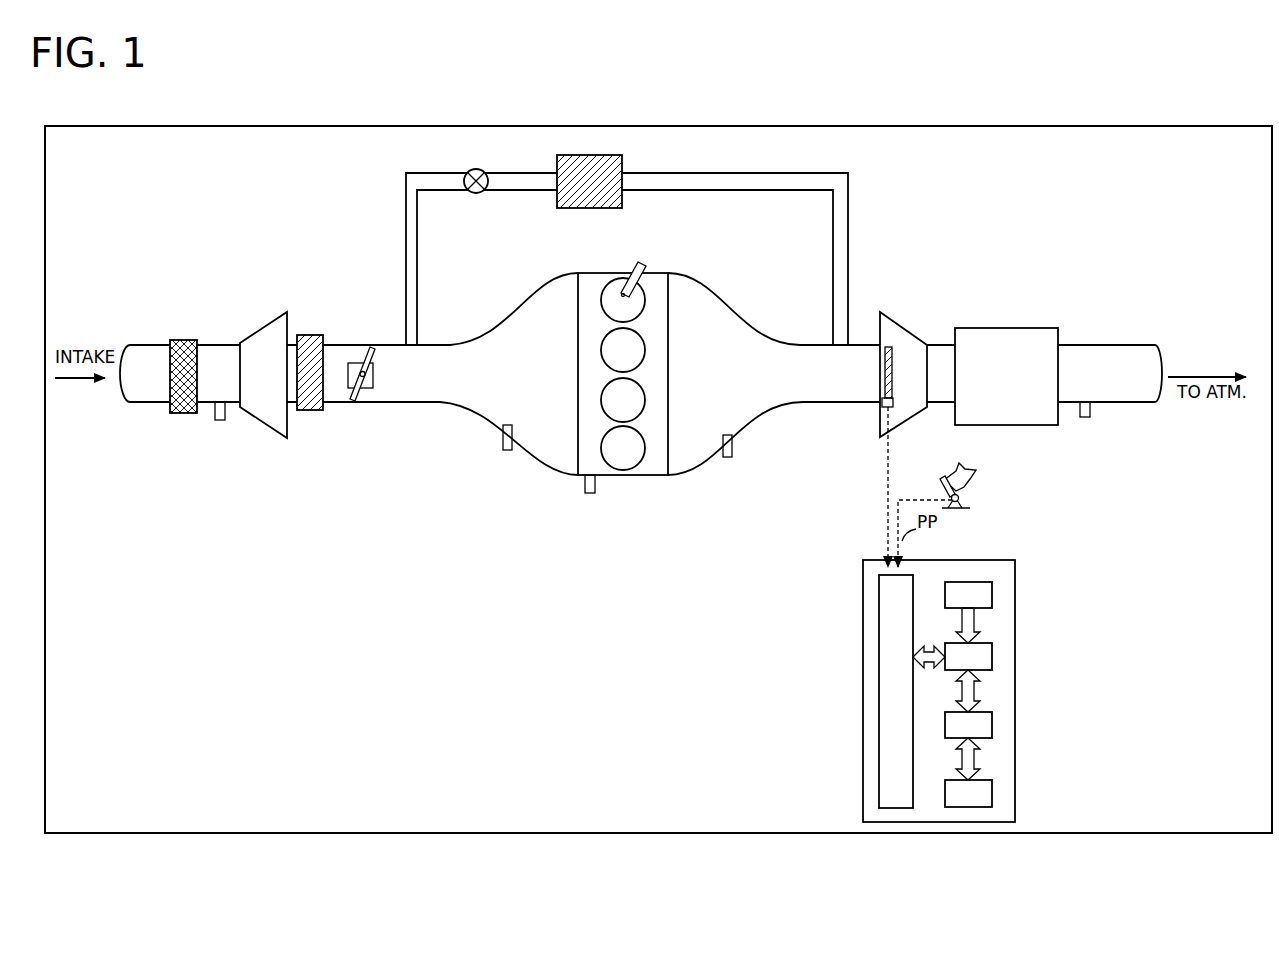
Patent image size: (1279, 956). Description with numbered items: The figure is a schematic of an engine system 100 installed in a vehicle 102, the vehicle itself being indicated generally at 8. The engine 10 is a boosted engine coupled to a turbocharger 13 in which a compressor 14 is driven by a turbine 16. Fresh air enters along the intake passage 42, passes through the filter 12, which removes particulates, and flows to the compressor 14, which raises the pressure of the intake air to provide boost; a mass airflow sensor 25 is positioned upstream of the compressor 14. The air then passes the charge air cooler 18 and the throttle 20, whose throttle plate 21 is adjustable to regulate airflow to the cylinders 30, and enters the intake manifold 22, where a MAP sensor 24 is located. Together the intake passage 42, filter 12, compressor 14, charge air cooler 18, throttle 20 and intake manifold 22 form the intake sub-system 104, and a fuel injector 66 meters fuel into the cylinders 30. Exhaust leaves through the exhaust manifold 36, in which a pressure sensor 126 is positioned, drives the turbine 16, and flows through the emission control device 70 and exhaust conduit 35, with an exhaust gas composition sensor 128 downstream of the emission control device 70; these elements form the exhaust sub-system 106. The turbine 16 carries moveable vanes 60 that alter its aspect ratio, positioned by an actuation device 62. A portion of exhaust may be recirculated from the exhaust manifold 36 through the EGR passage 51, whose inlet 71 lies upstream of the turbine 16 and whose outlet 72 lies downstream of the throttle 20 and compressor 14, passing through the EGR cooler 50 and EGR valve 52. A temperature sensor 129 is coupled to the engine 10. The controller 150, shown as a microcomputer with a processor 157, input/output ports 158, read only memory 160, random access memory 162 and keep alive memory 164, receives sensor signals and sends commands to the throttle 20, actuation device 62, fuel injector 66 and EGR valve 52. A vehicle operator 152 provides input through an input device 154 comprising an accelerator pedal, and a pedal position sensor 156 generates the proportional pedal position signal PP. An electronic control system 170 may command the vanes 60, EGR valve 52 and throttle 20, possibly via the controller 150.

The vehicle 8 is at (1185, 250).
The engine 10 is at (653, 273).
The filter 12 is at (184, 340).
The turbocharger 13 is at (264, 314).
The compressor 14 is at (263, 375).
The turbine 16 is at (885, 313).
The charge air cooler 18 is at (312, 335).
The throttle 20 is at (380, 384).
The throttle plate 21 is at (372, 349).
The intake manifold 22 is at (509, 374).
The MAP sensor 24 is at (504, 434).
The mass airflow sensor 25 is at (216, 421).
The cylinders 30 is at (645, 298).
The exhaust conduit 35 is at (1136, 345).
The exhaust manifold 36 is at (735, 374).
The intake passage 42 is at (161, 405).
The EGR cooler 50 is at (600, 155).
The EGR passage 51 is at (730, 173).
The EGR valve 52 is at (485, 170).
The vanes 60 is at (892, 381).
The actuation device 62 is at (893, 403).
The fuel injector 66 is at (628, 274).
The emission control device 70 is at (993, 328).
The inlet 71 is at (836, 355).
The outlet 72 is at (414, 354).
The engine system 100 is at (1197, 181).
The vehicle 102 is at (89, 126).
The intake sub-system 104 is at (205, 273).
The exhaust sub-system 106 is at (1057, 246).
The pressure sensor 126 is at (733, 442).
The exhaust gas composition sensor 128 is at (1085, 417).
The temperature sensor 129 is at (590, 494).
The controller 150 is at (1015, 560).
The vehicle operator 152 is at (976, 472).
The input device 154 is at (948, 493).
The pedal position sensor 156 is at (967, 498).
The processor 157 is at (992, 650).
The input/output ports 158 is at (913, 580).
The read only memory 160 is at (992, 592).
The random access memory 162 is at (992, 720).
The keep alive memory 164 is at (992, 787).
The electronic control system 170 is at (1095, 748).